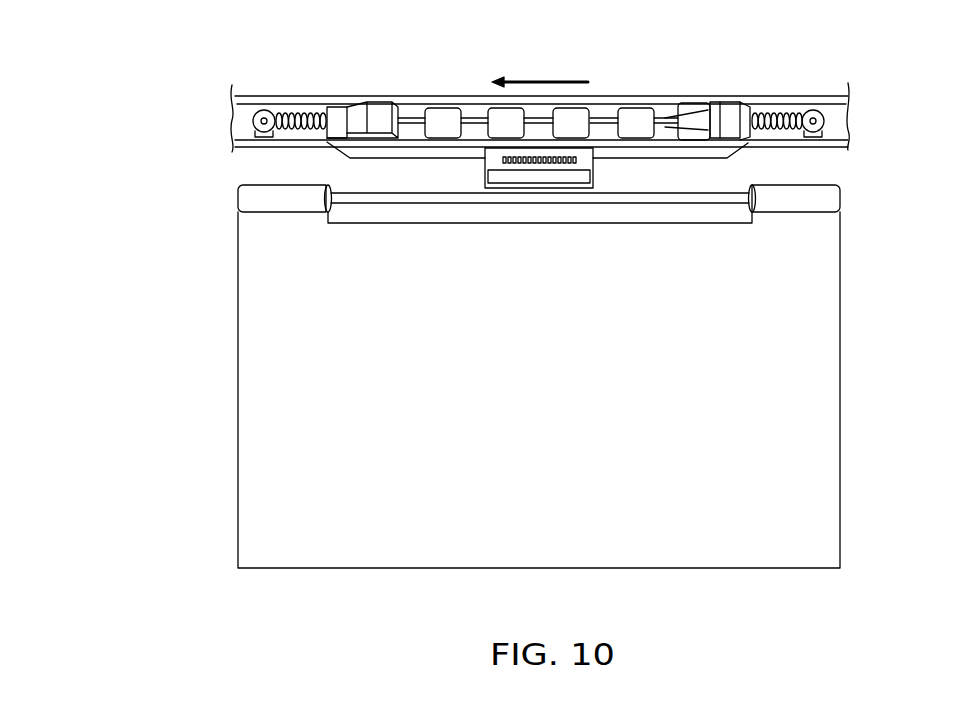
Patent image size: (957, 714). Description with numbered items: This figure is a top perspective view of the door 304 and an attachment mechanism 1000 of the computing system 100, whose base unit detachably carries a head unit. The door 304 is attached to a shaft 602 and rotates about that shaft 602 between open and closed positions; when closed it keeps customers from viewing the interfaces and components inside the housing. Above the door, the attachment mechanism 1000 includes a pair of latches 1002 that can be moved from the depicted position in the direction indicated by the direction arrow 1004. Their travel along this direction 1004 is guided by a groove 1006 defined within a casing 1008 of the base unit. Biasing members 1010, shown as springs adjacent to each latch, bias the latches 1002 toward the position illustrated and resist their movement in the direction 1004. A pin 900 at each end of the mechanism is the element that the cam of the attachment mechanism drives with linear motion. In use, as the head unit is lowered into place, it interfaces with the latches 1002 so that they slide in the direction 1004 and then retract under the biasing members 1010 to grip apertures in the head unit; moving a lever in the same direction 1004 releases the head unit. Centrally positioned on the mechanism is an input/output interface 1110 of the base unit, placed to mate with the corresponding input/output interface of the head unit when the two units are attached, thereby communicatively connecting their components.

The computing system 100 is at (124, 89).
The attachment mechanism 1000 is at (288, 70).
The pin 900 is at (267, 115).
The biasing members 1010 is at (303, 120).
The latches 1002 is at (354, 103).
The direction arrow 1004 is at (573, 80).
The casing 1008 is at (638, 95).
The groove 1006 is at (477, 105).
The input/output interface 1110 is at (593, 176).
The door 304 is at (238, 568).
The shaft 602 is at (380, 198).